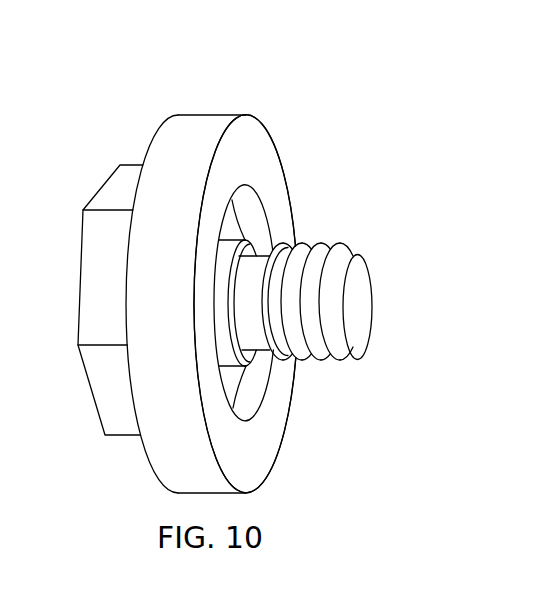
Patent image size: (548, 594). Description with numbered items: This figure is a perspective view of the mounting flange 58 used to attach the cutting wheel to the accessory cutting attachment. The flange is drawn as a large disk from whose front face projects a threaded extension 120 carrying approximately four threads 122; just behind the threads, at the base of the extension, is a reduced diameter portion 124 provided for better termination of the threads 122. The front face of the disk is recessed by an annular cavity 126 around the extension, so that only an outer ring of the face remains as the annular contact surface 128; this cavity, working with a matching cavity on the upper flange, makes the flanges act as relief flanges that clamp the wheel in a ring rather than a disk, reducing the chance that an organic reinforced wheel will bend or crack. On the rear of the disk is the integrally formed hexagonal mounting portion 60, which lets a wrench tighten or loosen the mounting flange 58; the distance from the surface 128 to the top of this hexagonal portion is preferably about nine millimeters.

The mounting flange 58 is at (295, 147).
The hexagonal mounting portion 60 is at (107, 258).
The threaded extension 120 is at (360, 287).
The threads 122 is at (332, 365).
The reduced diameter portion 124 is at (254, 264).
The annular cavity 126 is at (248, 205).
The annular contact surface 128 is at (247, 147).